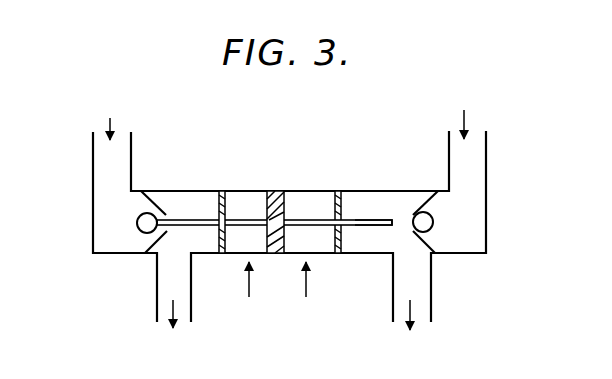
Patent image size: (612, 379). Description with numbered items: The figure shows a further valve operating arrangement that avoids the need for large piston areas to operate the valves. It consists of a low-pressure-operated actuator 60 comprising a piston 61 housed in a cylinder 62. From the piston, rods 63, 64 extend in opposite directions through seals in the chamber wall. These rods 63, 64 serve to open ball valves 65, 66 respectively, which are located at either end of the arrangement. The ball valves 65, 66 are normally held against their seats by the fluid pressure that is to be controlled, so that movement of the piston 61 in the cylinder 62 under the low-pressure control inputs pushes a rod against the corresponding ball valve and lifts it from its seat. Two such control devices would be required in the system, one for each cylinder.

The low-pressure-operated actuator 60 is at (303, 190).
The piston 61 is at (276, 195).
The cylinder 62 is at (233, 190).
The rod 63 is at (183, 218).
The rod 64 is at (361, 218).
The ball valve 65 is at (143, 220).
The ball valve 66 is at (428, 222).